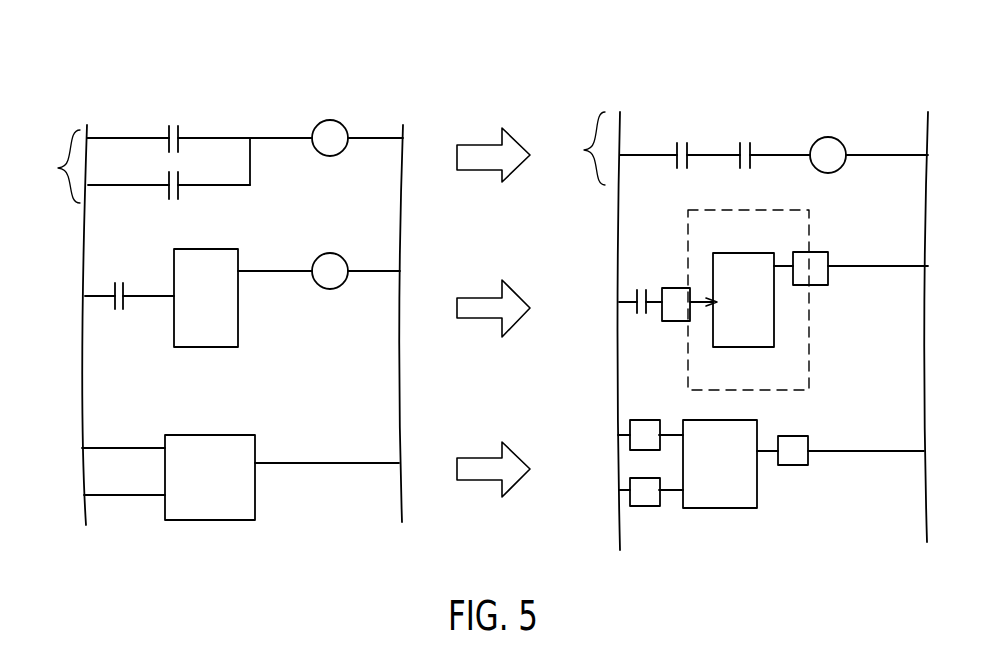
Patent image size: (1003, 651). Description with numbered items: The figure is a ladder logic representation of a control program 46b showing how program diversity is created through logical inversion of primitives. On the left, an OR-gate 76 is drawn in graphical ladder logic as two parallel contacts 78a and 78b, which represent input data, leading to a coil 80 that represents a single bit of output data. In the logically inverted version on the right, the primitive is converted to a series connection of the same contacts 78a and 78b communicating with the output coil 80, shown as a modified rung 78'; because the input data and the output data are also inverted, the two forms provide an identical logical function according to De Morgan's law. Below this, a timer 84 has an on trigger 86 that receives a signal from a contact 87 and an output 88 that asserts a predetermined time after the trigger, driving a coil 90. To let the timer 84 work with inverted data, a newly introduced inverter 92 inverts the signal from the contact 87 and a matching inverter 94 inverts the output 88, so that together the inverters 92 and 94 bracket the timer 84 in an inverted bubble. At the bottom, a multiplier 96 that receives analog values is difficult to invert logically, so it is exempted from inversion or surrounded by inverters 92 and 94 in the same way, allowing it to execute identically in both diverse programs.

The diverse control program 46b is at (396, 82).
The OR-gate 76 is at (50, 166).
The contact 78a is at (178, 129).
The contact 78b is at (180, 184).
The coil 80 is at (331, 121).
The timer 84 is at (240, 318).
The on trigger 86 is at (193, 292).
The contact 87 is at (124, 284).
The timer output 88 is at (279, 271).
The coil 90 is at (331, 253).
The multiplier 96 is at (240, 522).
The modified contact rung 78' is at (574, 148).
The inverter 92 is at (676, 322).
The inverter 94 is at (820, 254).